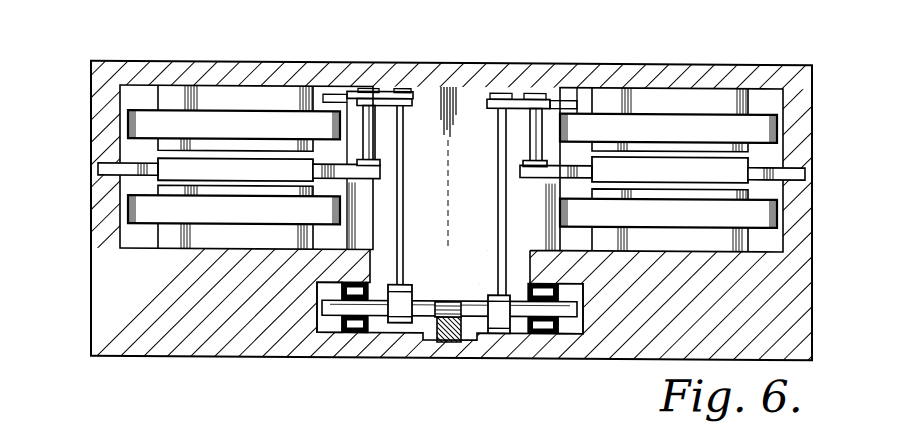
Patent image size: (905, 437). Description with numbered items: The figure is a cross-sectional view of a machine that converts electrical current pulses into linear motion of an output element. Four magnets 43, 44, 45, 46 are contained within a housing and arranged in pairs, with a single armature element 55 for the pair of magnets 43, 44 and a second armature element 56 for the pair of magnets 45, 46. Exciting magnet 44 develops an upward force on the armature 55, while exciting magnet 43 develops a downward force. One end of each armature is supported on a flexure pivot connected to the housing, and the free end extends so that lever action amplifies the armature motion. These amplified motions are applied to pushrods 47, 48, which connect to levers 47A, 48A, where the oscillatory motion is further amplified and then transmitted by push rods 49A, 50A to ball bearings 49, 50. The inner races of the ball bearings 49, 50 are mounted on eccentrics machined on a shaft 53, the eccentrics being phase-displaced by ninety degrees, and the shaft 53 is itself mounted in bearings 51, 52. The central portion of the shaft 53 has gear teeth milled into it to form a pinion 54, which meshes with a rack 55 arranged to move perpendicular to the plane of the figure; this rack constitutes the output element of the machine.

The magnet 43 is at (723, 217).
The magnet 44 is at (678, 127).
The magnet 45 is at (217, 215).
The magnet 46 is at (240, 123).
The pushrod 47 is at (523, 132).
The lever 47A is at (522, 97).
The pushrod 48 is at (380, 133).
The lever 48A is at (388, 96).
The ball bearing 49 is at (503, 295).
The push rod 49A is at (496, 158).
The ball bearing 50 is at (410, 288).
The push rod 50A is at (407, 221).
The bearing 51 is at (553, 333).
The bearing 52 is at (337, 328).
The shaft 53 is at (382, 316).
The pinion 54 is at (451, 302).
The armature element 55 is at (727, 167).
The armature element 56 is at (190, 174).